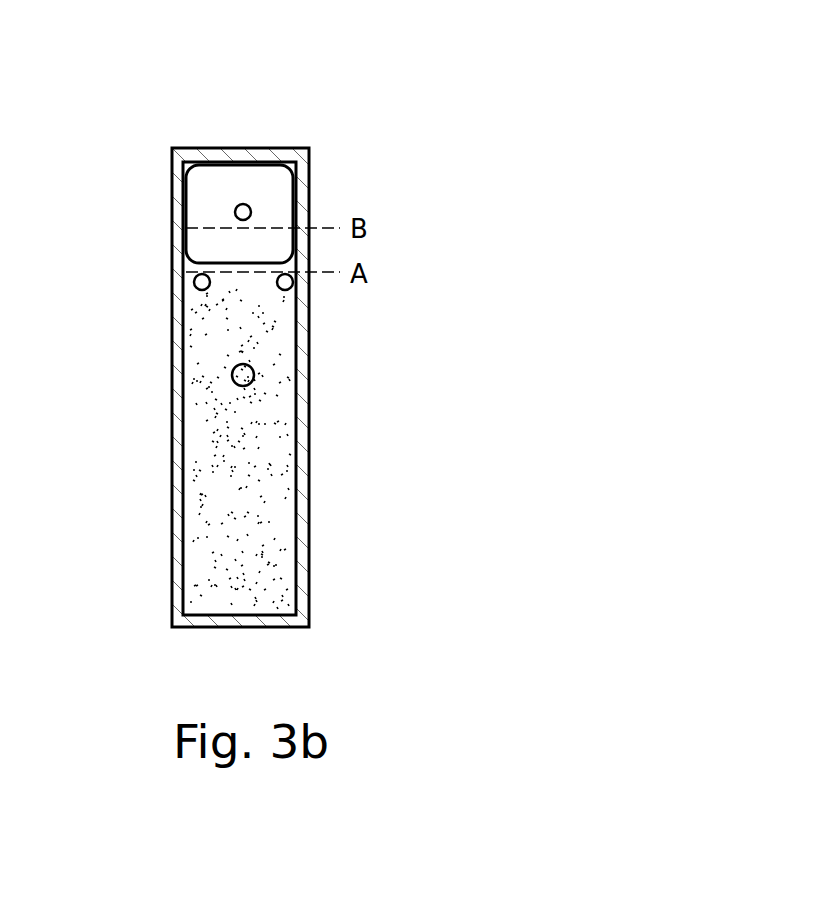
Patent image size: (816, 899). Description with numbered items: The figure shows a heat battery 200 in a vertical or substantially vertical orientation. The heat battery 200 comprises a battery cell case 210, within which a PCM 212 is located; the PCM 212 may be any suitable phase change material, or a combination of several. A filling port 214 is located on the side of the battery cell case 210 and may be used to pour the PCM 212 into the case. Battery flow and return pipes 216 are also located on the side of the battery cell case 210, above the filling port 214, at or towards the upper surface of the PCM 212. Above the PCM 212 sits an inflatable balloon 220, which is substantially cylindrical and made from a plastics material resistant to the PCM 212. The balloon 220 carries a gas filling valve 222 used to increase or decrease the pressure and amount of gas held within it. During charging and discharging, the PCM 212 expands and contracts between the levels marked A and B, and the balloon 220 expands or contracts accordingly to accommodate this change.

The heat battery 200 is at (396, 79).
The battery cell case 210 is at (303, 453).
The PCM 212 is at (212, 473).
The filling port 214 is at (230, 365).
The battery flow and return pipes 216 is at (195, 278).
The inflatable balloon 220 is at (200, 201).
The gas filling valve 222 is at (243, 203).